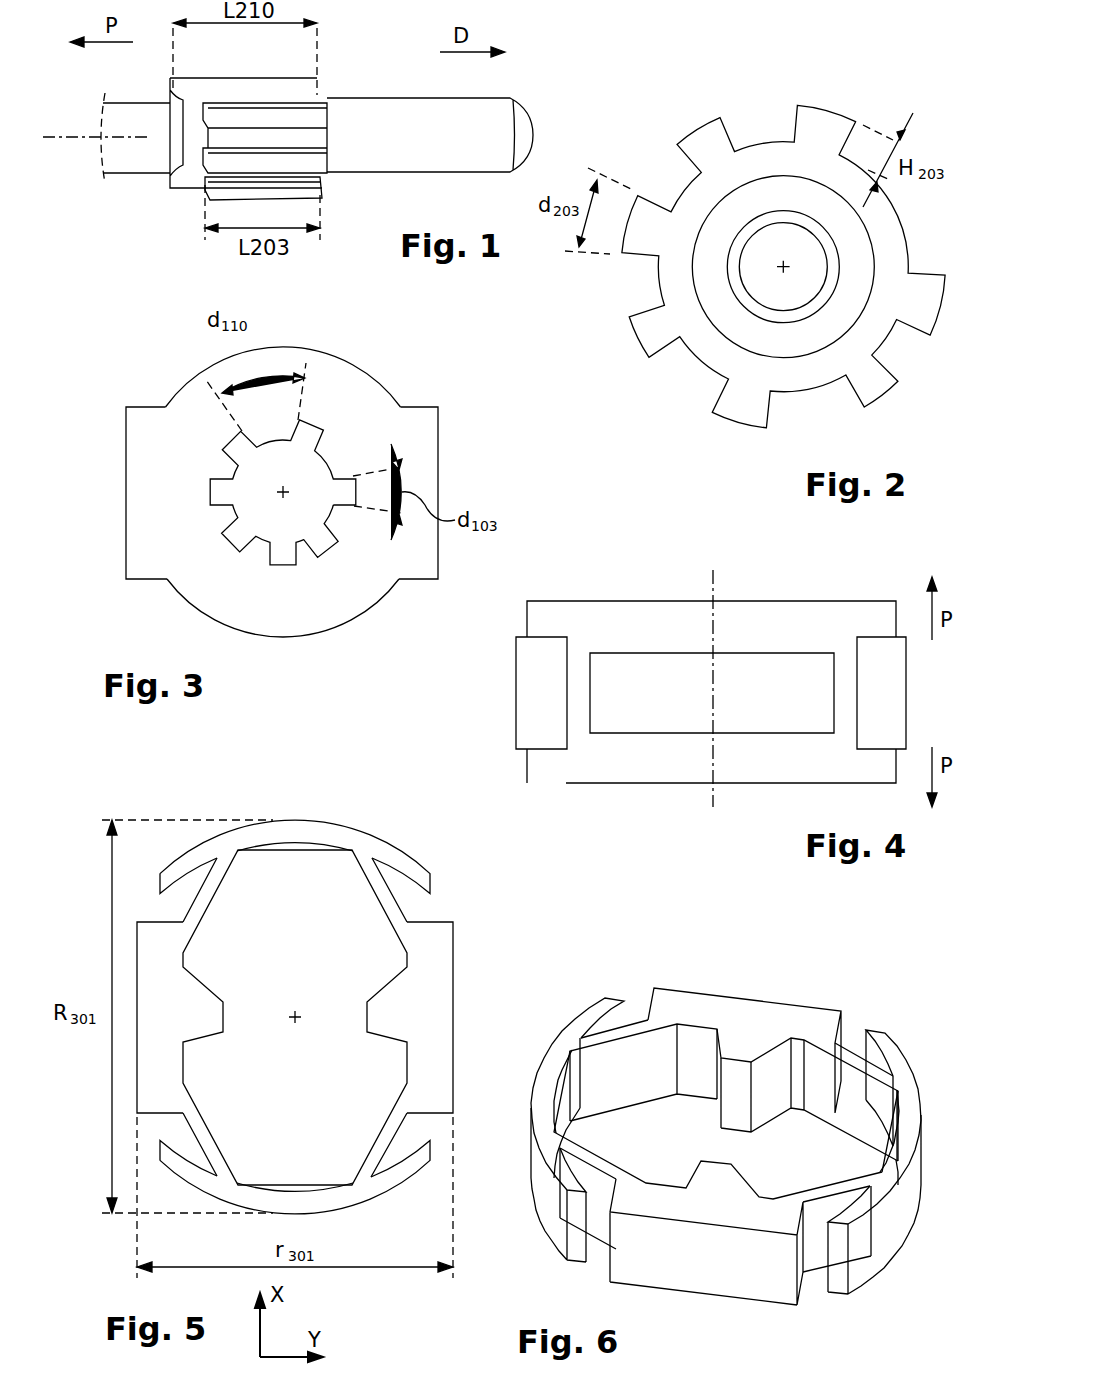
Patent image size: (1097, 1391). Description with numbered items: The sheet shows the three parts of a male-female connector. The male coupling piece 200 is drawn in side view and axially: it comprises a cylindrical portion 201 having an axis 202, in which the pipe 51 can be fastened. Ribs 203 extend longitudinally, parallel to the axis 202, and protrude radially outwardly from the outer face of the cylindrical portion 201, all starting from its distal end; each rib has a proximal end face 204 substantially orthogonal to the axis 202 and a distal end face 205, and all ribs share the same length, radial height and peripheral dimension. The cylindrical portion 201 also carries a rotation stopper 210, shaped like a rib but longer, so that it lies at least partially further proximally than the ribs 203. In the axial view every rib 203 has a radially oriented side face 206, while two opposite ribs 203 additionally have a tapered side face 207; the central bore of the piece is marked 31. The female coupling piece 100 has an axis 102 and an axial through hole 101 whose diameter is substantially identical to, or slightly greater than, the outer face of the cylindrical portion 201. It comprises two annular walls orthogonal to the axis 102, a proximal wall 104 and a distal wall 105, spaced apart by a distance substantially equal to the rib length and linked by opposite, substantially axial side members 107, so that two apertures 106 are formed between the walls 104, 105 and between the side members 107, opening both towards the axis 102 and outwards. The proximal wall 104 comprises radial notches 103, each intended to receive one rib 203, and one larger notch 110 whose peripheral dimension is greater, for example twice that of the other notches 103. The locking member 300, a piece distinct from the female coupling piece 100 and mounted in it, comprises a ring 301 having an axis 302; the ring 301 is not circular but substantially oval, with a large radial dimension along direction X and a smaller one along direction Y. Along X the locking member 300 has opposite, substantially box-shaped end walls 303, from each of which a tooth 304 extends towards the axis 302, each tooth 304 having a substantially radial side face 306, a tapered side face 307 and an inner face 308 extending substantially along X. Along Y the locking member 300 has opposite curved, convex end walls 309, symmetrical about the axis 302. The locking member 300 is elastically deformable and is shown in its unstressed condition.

In FIG. 2, the bore ring 31 is at (724, 307).
In FIG. 1, the pipe 51 is at (140, 157).
In FIG. 3, the female coupling piece 100 is at (98, 427).
In FIG. 4, the female coupling piece 100 is at (500, 772).
In FIG. 3, the through hole 101 is at (265, 528).
In FIG. 3, the axis 102 is at (290, 500).
In FIG. 4, the axis 102 is at (713, 798).
In FIG. 3, the radial notches 103 is at (285, 562).
In FIG. 3, the proximal wall 104 is at (328, 392).
In FIG. 4, the proximal wall 104 is at (785, 628).
In FIG. 4, the distal wall 105 is at (650, 760).
In FIG. 4, the apertures 106 is at (648, 687).
In FIG. 3, the side members 107 is at (422, 418).
In FIG. 4, the side members 107 is at (540, 673).
In FIG. 3, the larger notch 110 is at (323, 437).
In FIG. 1, the male coupling piece 200 is at (177, 200).
In FIG. 2, the male coupling piece 200 is at (670, 180).
In FIG. 1, the cylindrical portion 201 is at (193, 170).
In FIG. 2, the cylindrical portion 201 is at (878, 223).
In FIG. 1, the axis 202 is at (55, 140).
In FIG. 2, the axis 202 is at (781, 266).
In FIG. 1, the ribs 203 is at (307, 110).
In FIG. 2, the ribs 203 is at (653, 340).
In FIG. 1, the proximal end face 204 is at (203, 112).
In FIG. 1, the distal end face 205 is at (330, 110).
In FIG. 2, the side face 206 is at (788, 123).
In FIG. 2, the tapered side face 207 is at (724, 129).
In FIG. 1, the rotation stopper 210 is at (187, 85).
In FIG. 2, the rotation stopper 210 is at (926, 309).
In FIG. 5, the locking member 300 is at (92, 937).
In FIG. 6, the locking member 300 is at (850, 925).
In FIG. 5, the ring 301 is at (435, 910).
In FIG. 6, the ring 301 is at (858, 1037).
In FIG. 5, the axis 302 is at (295, 1015).
In FIG. 5, the end walls 303 is at (435, 1083).
In FIG. 6, the end walls 303 is at (812, 1017).
In FIG. 5, the tooth 304 is at (392, 1020).
In FIG. 6, the tooth 304 is at (747, 1042).
In FIG. 5, the radial side face 306 is at (388, 992).
In FIG. 6, the radial side face 306 is at (718, 1070).
In FIG. 5, the tapered side face 307 is at (200, 973).
In FIG. 6, the tapered side face 307 is at (757, 1077).
In FIG. 5, the inner face 308 is at (360, 1013).
In FIG. 6, the inner face 308 is at (732, 1105).
In FIG. 5, the end walls 309 is at (388, 850).
In FIG. 6, the end walls 309 is at (902, 1063).